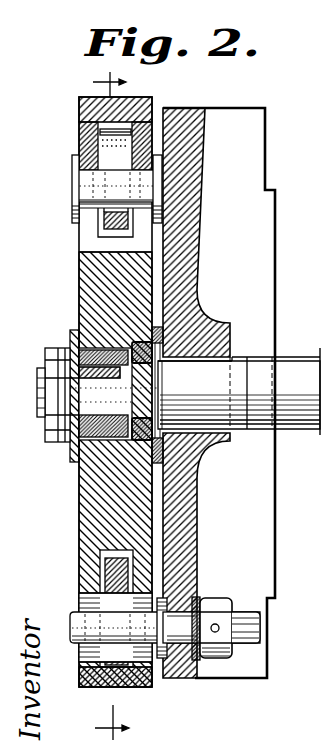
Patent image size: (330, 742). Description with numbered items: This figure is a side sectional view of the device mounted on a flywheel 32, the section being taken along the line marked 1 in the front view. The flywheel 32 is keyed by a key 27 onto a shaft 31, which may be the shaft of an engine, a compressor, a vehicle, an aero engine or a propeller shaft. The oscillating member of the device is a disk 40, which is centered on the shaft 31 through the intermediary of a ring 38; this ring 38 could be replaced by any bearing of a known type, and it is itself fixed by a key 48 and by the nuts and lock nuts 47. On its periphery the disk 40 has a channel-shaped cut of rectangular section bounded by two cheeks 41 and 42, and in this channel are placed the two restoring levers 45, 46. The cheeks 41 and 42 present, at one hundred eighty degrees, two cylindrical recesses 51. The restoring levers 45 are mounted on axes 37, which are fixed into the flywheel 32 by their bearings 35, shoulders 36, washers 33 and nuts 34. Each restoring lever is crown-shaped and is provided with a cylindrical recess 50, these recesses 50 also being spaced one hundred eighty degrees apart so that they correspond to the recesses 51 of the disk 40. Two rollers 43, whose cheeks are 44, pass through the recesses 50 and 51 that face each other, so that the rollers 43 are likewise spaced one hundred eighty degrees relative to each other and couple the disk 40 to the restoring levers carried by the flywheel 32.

The section line 1- 1 is at (117, 406).
The key 27 is at (197, 432).
The shaft 31 is at (222, 326).
The flywheel 32 is at (180, 515).
The washers 33 is at (198, 604).
The nuts 34 is at (220, 600).
The bearings 35 is at (186, 630).
The shoulders 36 is at (160, 660).
The axes 37 is at (85, 622).
The ring 38 is at (67, 348).
The disk 40 is at (95, 278).
The cheek 41 is at (150, 237).
The cheek 42 is at (80, 243).
The rollers 43 is at (90, 188).
The cheeks of rollers 44 is at (73, 166).
The restoring lever 45 is at (108, 129).
The restoring lever 46 is at (84, 104).
The nuts and lock nuts 47 is at (65, 403).
The key 48 is at (90, 369).
The cylindrical recess 50 is at (108, 146).
The cylindrical recesses 51 is at (92, 222).